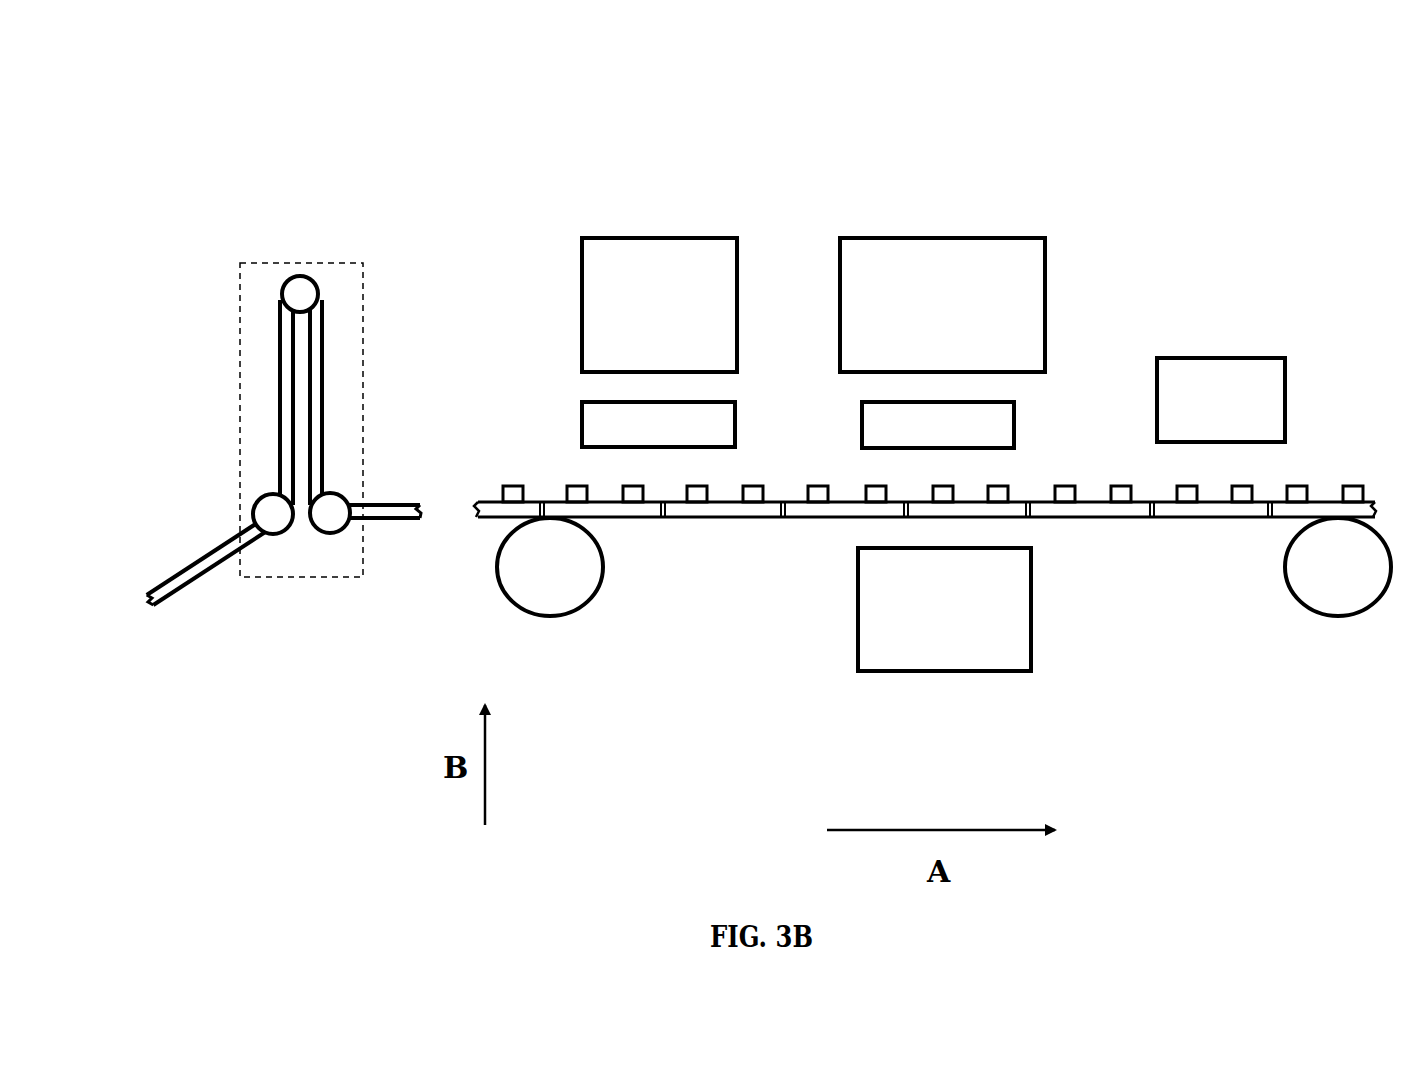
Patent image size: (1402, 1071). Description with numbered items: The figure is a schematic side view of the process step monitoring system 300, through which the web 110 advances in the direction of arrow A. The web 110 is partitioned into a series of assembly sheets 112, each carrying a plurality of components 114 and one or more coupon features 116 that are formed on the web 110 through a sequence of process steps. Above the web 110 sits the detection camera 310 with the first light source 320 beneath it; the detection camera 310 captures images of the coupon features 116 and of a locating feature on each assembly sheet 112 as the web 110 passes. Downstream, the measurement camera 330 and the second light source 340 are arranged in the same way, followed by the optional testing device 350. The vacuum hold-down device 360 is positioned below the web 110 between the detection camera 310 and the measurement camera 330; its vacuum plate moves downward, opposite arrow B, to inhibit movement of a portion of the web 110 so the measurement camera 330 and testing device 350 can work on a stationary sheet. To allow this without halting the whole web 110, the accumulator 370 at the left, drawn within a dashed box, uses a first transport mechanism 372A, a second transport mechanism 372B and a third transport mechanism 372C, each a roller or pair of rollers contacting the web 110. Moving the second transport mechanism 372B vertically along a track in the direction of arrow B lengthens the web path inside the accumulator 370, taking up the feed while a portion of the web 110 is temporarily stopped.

The process step monitoring system 300 is at (595, 142).
The detection camera 310 is at (612, 238).
The first light source 320 is at (737, 415).
The measurement camera 330 is at (945, 238).
The second light source 340 is at (1014, 427).
The testing device 350 is at (1210, 358).
The vacuum hold-down device 360 is at (943, 671).
The accumulator 370 is at (306, 408).
The first transport mechanism 372A is at (275, 525).
The second transport mechanism 372B is at (298, 298).
The third transport mechanism 372C is at (330, 530).
The web 110 is at (545, 448).
The assembly sheets 112 is at (725, 512).
The components 114 is at (685, 498).
The coupon features 116 is at (757, 495).